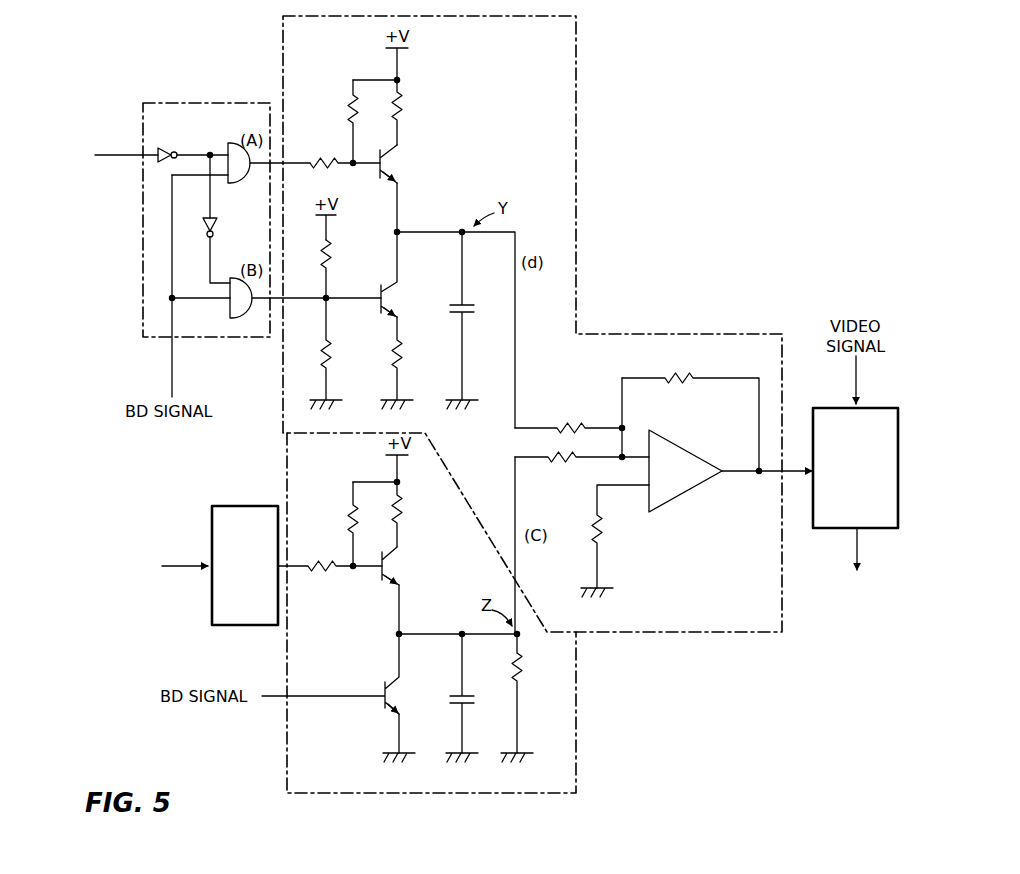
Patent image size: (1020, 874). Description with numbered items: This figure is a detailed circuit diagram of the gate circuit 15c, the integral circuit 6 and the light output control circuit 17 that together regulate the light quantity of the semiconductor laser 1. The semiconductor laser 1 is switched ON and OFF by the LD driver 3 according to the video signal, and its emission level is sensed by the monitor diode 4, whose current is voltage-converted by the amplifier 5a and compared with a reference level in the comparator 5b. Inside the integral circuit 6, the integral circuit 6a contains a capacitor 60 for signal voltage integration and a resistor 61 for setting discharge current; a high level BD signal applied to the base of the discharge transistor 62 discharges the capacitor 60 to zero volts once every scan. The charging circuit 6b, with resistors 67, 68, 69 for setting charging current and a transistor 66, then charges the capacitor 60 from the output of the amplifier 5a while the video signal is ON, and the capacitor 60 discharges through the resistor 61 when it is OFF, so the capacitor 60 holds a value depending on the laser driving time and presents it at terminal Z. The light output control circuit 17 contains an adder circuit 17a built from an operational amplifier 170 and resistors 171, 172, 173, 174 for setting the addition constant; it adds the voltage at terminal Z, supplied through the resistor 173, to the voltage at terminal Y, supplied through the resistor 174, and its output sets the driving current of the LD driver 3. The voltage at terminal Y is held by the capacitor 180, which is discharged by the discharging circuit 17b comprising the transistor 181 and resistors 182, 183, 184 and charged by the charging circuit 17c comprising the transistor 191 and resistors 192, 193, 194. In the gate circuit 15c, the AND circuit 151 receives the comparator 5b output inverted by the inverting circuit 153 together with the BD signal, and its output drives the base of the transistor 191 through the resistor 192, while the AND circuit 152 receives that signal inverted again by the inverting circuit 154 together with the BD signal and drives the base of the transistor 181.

The light output control circuit 17 is at (577, 200).
The adder circuit 17a is at (661, 557).
The discharging circuit 17b is at (371, 240).
The charging circuit 17c is at (456, 111).
The integral circuit 6 is at (578, 763).
The integral circuit 6a is at (430, 778).
The charging circuit 6b is at (345, 600).
The gate circuit 15c is at (252, 103).
The amplifier 5a is at (250, 506).
The comparator 5b is at (94, 137).
The LD driver 3 is at (880, 408).
The semiconductor laser 1 is at (855, 576).
The monitor diode 4 is at (140, 572).
The AND circuit 151 is at (248, 185).
The AND circuit 152 is at (230, 312).
The inverting circuit 153 is at (166, 150).
The inverting circuit 154 is at (214, 231).
The transistor 191 is at (404, 170).
The resistor 192 is at (308, 116).
The resistor 193 is at (338, 92).
The resistor 194 is at (410, 88).
The transistor 181 is at (404, 291).
The resistor 182 is at (410, 352).
The resistor 183 is at (340, 358).
The resistor 184 is at (338, 262).
The capacitor 180 is at (470, 328).
The operational amplifier 170 is at (695, 498).
The resistor 171 is at (683, 392).
The resistor 172 is at (622, 514).
The resistor 173 is at (568, 474).
The resistor 174 is at (574, 407).
The capacitor 60 is at (471, 685).
The resistor 61 is at (531, 705).
The discharge transistor 62 is at (416, 710).
The transistor 66 is at (408, 580).
The resistor 67 is at (322, 584).
The resistor 68 is at (343, 500).
The resistor 69 is at (412, 510).